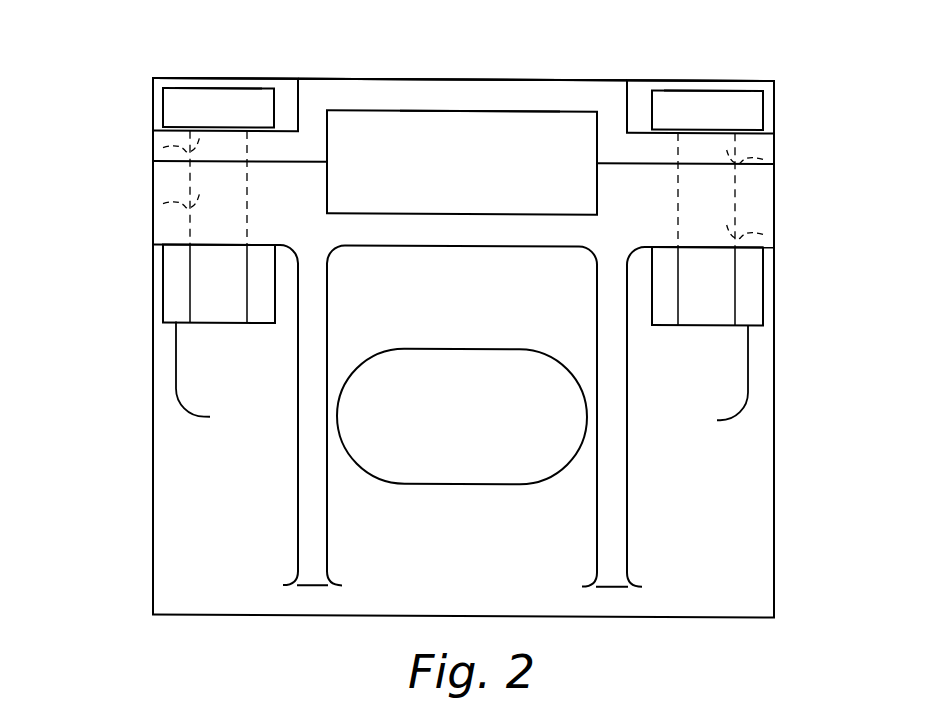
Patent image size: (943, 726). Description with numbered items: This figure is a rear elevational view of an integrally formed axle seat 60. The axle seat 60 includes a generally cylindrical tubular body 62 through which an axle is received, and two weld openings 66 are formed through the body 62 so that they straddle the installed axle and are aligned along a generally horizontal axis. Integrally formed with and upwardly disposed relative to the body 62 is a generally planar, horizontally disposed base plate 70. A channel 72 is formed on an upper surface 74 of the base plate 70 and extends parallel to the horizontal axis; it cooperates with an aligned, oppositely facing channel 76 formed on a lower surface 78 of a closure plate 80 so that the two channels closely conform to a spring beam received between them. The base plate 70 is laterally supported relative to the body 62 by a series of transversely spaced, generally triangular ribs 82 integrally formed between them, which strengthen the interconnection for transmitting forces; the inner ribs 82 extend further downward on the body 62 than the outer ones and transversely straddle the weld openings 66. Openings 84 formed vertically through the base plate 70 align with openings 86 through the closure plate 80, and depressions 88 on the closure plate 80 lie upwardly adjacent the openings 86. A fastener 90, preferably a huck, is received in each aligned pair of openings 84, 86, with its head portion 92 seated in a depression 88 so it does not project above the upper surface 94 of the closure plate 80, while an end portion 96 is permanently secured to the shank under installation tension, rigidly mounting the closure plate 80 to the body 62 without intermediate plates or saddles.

The axle seat 60 is at (126, 67).
The tubular body 62 is at (142, 452).
The weld openings 66 is at (457, 483).
The base plate 70 is at (786, 192).
The channel 72 is at (437, 213).
The upper surface 74 is at (638, 162).
The channel 76 is at (478, 112).
The lower surface 78 is at (302, 163).
The closure plate 80 is at (460, 72).
The ribs 82 is at (153, 343).
The openings 84 is at (155, 210).
The openings 86 is at (155, 153).
The depressions 88 is at (287, 127).
The fastener 90 is at (215, 80).
The head portion 92 is at (163, 105).
The upper surface 94 is at (377, 78).
The end portion 96 is at (163, 280).